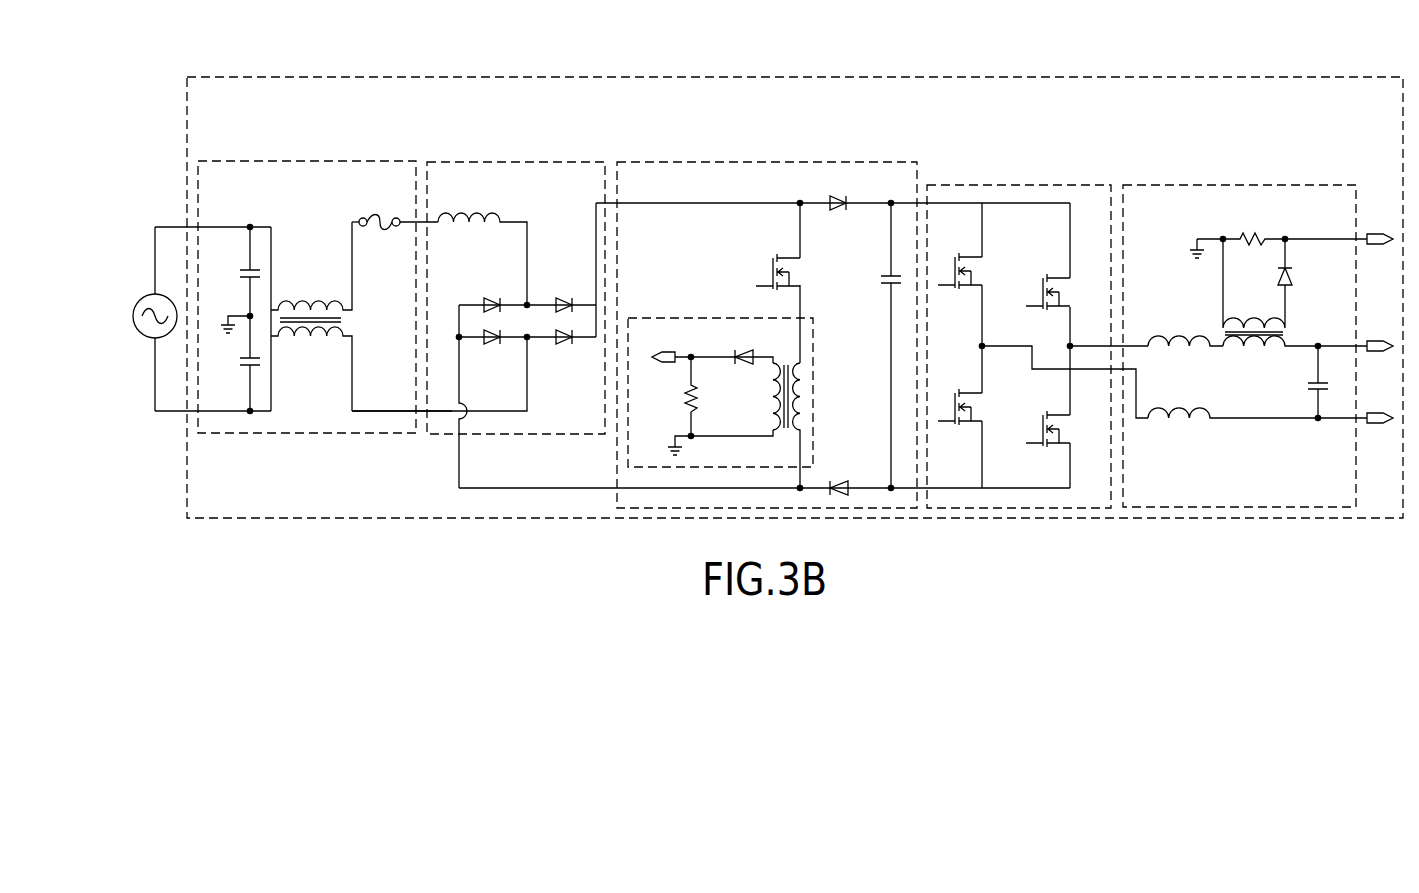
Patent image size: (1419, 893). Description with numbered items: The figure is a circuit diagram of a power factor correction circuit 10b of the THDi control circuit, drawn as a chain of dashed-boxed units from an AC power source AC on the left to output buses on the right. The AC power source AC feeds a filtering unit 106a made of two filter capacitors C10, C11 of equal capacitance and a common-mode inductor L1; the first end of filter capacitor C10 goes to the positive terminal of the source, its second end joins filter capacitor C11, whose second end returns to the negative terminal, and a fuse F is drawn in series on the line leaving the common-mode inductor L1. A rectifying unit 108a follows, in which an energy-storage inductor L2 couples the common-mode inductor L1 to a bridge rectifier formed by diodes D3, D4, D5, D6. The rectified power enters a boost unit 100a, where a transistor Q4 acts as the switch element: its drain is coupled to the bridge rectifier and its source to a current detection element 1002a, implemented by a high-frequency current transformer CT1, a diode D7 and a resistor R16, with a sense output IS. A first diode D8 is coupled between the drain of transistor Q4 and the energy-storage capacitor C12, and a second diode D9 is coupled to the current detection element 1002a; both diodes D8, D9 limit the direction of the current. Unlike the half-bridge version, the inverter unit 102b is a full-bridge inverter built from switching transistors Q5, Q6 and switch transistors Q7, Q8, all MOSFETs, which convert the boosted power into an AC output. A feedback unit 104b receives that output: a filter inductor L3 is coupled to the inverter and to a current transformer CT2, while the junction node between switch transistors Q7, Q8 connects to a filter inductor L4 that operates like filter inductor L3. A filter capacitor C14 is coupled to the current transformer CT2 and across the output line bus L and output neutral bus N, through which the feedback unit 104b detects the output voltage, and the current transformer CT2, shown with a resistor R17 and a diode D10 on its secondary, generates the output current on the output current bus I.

The power factor correction circuit 10b is at (915, 77).
The filtering unit 106a is at (314, 161).
The rectifying unit 108a is at (526, 162).
The boost unit 100a is at (768, 162).
The current detection element 1002a is at (683, 318).
The inverter unit 102b is at (1028, 185).
The feedback unit 104b is at (1247, 185).
The AC power source AC is at (137, 319).
The filter capacitor C10 is at (232, 271).
The filter capacitor C11 is at (232, 363).
The common-mode inductor L1 is at (311, 316).
The fuse F is at (395, 210).
The energy-storage inductor L2 is at (482, 245).
The diode D3 is at (493, 290).
The diode D4 is at (565, 290).
The diode D5 is at (493, 354).
The diode D6 is at (565, 354).
The diode D7 is at (746, 343).
The first diode D8 is at (841, 191).
The second diode D9 is at (841, 475).
The diode D10 is at (1310, 265).
The transistor Q4 is at (793, 283).
The switching transistor Q5 is at (1063, 274).
The switching transistor Q6 is at (1063, 417).
The switch transistor Q7 is at (975, 274).
The switch transistor Q8 is at (975, 417).
The energy-storage capacitor C12 is at (873, 345).
The filter capacitor C14 is at (1295, 382).
The current sense terminal IS is at (663, 343).
The resistor R16 is at (668, 396).
The resistor R17 is at (1282, 226).
The high-frequency current transformer CT1 is at (764, 425).
The current transformer CT2 is at (1270, 292).
The filter inductor L3 is at (1185, 330).
The filter inductor L4 is at (1233, 402).
The output current bus I is at (1380, 226).
The output line bus L is at (1380, 333).
The output neutral bus N is at (1380, 405).